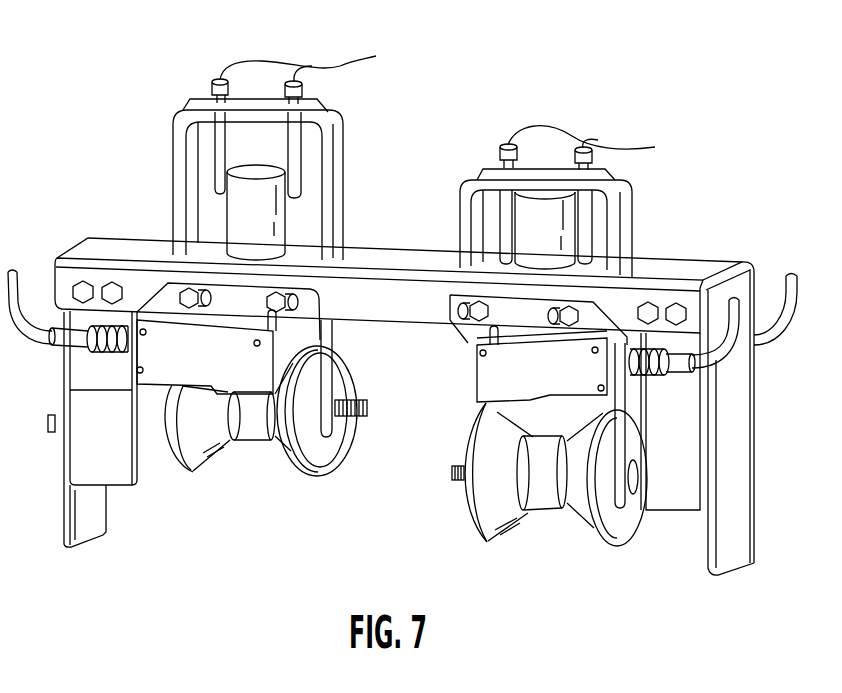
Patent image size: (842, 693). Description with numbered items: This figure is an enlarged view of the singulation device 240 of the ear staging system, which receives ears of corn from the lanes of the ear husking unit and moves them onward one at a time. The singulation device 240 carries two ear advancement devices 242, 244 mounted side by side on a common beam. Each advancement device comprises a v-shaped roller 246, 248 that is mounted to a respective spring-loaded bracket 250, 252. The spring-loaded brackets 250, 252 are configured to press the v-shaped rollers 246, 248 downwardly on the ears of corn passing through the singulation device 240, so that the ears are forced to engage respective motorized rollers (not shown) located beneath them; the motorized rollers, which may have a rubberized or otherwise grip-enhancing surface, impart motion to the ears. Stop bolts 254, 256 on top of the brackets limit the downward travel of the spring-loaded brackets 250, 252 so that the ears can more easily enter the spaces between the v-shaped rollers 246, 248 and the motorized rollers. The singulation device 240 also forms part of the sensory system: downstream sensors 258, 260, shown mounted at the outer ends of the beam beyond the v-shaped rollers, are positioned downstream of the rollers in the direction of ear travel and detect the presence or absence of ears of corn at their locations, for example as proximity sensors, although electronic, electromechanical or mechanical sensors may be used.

The singulation device 240 is at (97, 117).
The ear advancement device 242 is at (355, 50).
The ear advancement device 244 is at (470, 120).
The v-shaped roller 246 is at (258, 443).
The v-shaped roller 248 is at (548, 514).
The spring-loaded bracket 250 is at (334, 116).
The spring-loaded bracket 252 is at (628, 186).
The stop bolt 254 is at (307, 55).
The stop bolt 256 is at (590, 133).
The downstream sensor 258 is at (64, 389).
The downstream sensor 260 is at (577, 380).